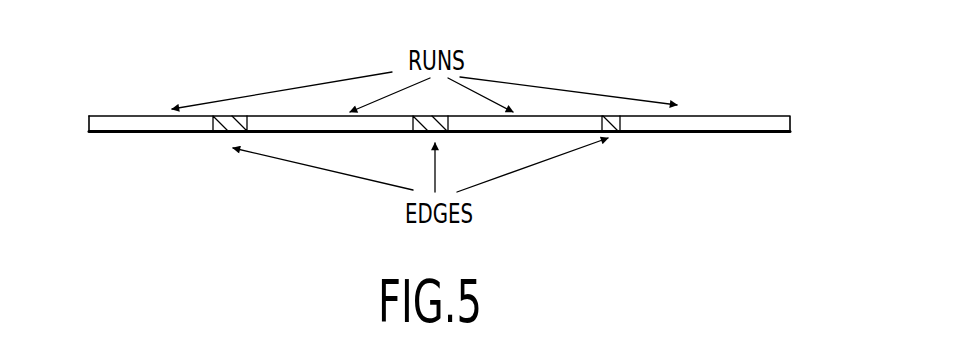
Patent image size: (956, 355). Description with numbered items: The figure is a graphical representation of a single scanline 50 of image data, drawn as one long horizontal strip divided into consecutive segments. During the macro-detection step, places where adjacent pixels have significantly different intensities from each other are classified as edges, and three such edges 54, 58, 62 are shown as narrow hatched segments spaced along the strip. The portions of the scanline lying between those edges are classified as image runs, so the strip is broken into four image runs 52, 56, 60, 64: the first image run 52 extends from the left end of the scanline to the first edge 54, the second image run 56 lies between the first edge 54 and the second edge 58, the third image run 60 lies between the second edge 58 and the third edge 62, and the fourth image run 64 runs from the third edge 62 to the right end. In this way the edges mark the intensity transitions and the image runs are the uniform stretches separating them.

The tape strip 50 is at (102, 115).
The image run 52 is at (120, 132).
The edge 54 is at (223, 132).
The image run 56 is at (317, 122).
The edge 58 is at (437, 132).
The image run 60 is at (555, 122).
The edge 62 is at (613, 132).
The image run 64 is at (740, 125).